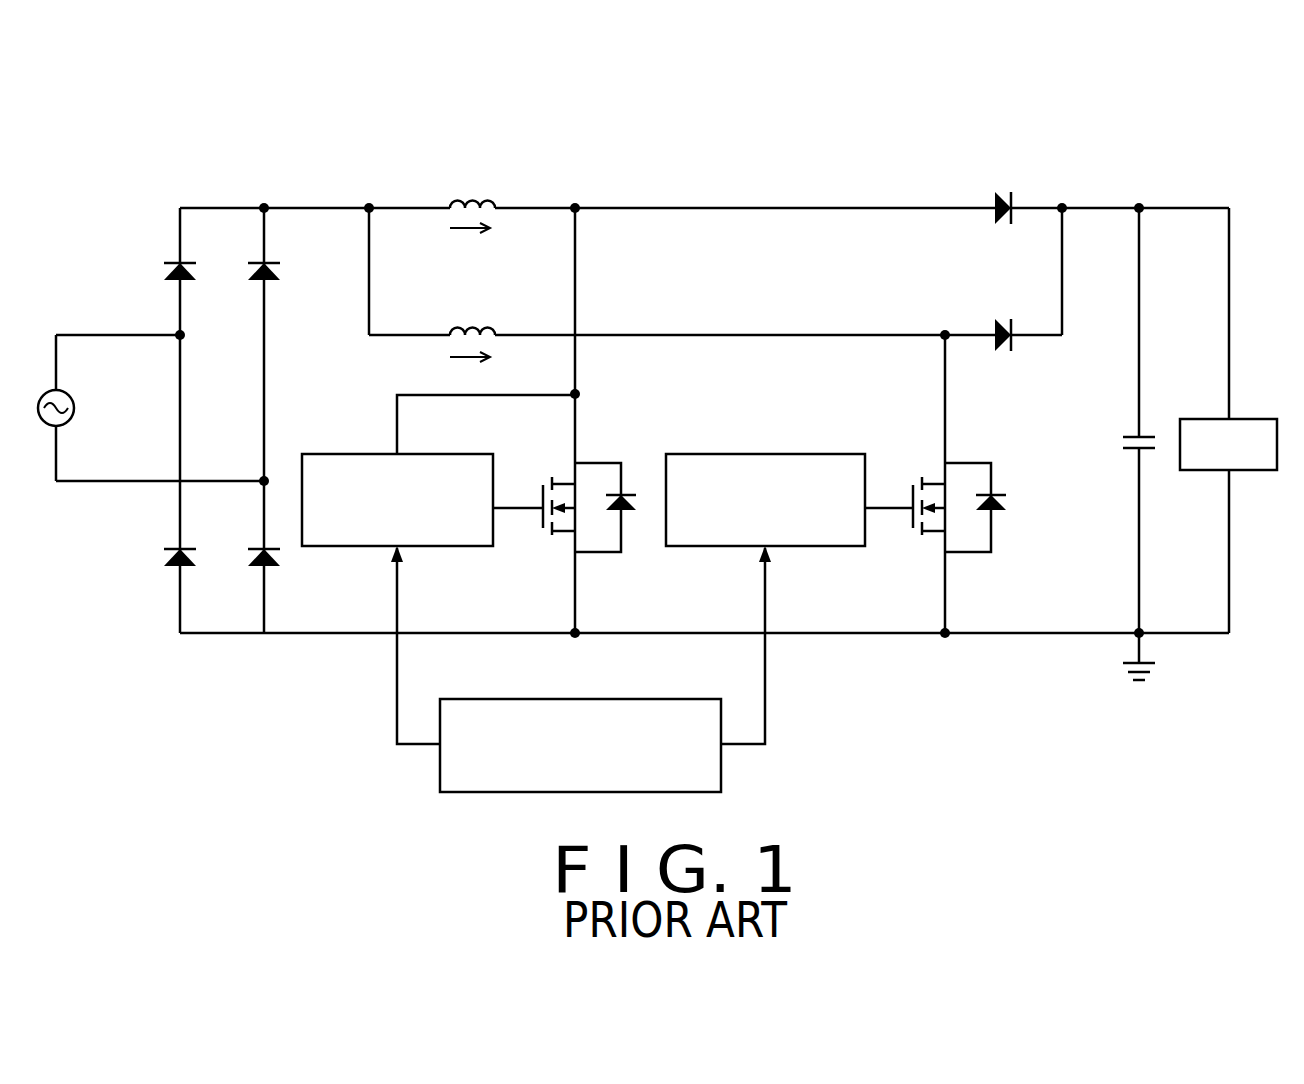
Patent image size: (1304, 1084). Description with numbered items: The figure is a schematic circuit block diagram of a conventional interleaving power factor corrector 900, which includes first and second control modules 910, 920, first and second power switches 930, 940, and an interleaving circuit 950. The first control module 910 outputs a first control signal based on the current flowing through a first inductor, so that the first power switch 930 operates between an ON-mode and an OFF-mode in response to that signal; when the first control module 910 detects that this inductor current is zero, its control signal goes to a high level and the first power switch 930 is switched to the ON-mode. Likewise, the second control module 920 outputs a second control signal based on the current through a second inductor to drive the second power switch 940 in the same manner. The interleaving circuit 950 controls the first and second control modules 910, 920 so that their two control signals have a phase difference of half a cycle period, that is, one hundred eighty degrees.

The interleaving power factor corrector 900 is at (855, 187).
The first control module 910 is at (343, 546).
The second control module 920 is at (810, 546).
The first power switch 930 is at (575, 477).
The second power switch 940 is at (943, 480).
The interleaving circuit 950 is at (445, 782).